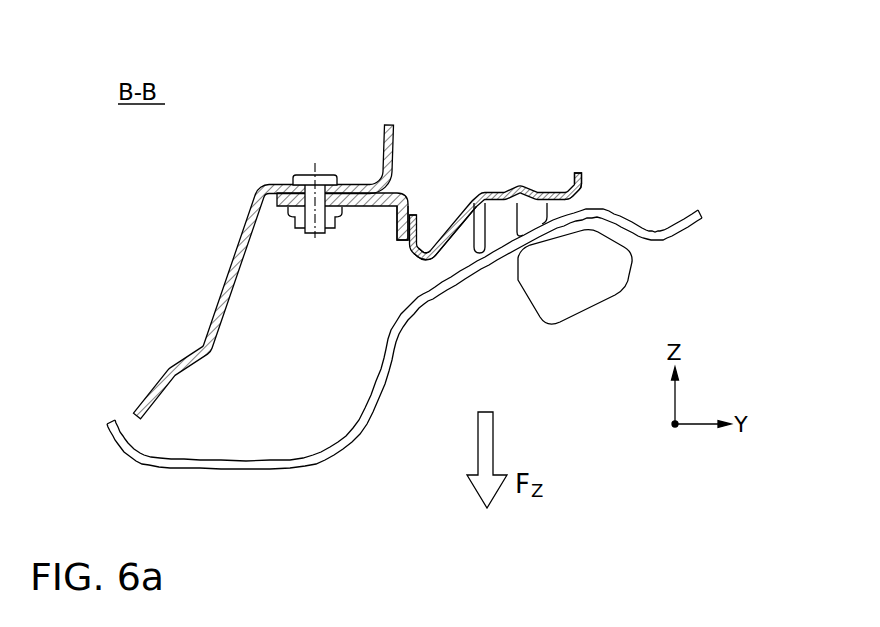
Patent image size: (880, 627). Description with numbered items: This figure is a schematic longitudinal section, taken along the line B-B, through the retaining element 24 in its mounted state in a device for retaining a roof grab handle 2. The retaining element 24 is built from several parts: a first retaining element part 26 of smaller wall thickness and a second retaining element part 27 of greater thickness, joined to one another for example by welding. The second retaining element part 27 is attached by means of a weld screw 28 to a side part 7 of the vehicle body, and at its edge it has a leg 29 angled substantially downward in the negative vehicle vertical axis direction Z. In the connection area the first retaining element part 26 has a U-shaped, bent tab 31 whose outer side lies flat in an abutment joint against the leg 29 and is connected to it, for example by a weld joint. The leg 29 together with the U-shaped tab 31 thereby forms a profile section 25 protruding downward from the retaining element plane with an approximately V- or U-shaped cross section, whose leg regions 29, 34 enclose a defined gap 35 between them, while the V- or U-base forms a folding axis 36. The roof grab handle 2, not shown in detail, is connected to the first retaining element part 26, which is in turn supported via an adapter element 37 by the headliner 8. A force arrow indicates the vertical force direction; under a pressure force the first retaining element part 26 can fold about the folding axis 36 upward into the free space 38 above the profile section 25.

The roof grab handle 2 is at (563, 287).
The side part 7 is at (232, 241).
The headliner 8 is at (237, 463).
The retaining element 24 is at (520, 90).
The profile section 25 is at (448, 270).
The first retaining element part 26 is at (530, 193).
The second retaining element part 27 is at (363, 203).
The weld screw 28 is at (310, 182).
The leg 29 is at (400, 225).
The U-shaped bent tab 31 is at (415, 217).
The leg region 34 is at (469, 194).
The gap 35 is at (428, 236).
The folding axis 36 is at (427, 260).
The adapter element 37 is at (483, 248).
The free space 38 is at (505, 163).